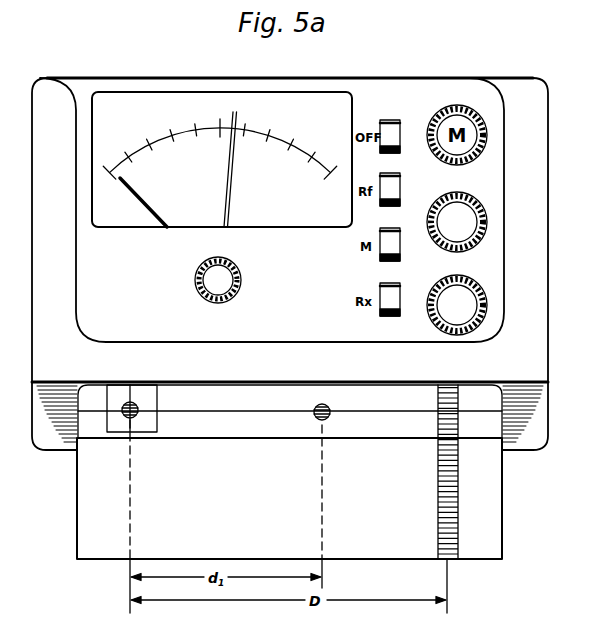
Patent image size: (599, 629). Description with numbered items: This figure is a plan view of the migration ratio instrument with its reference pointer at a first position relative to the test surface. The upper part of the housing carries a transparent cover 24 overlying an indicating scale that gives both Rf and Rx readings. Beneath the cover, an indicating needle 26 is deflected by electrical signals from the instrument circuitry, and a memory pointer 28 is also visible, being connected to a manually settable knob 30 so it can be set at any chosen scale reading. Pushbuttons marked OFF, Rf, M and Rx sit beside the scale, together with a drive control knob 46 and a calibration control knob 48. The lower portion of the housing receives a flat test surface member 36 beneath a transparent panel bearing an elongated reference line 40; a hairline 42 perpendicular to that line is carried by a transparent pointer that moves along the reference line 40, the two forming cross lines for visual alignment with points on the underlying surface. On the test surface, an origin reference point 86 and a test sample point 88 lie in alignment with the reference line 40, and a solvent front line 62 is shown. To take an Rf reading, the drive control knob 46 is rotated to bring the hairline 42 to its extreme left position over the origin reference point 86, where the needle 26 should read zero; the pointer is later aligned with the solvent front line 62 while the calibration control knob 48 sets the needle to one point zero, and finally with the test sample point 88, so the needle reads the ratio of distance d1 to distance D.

The transparent cover 24 is at (124, 97).
The indicating needle 26 is at (149, 210).
The memory pointer 28 is at (229, 178).
The manually settable knob 30 is at (235, 276).
The test surface member 36 is at (98, 490).
The reference line 40 is at (238, 410).
The hairline 42 is at (131, 400).
The drive control knob 46 is at (470, 308).
The calibration control knob 48 is at (465, 223).
The solvent front line 62 is at (458, 532).
The origin reference point 86 is at (138, 407).
The test sample point 88 is at (332, 403).